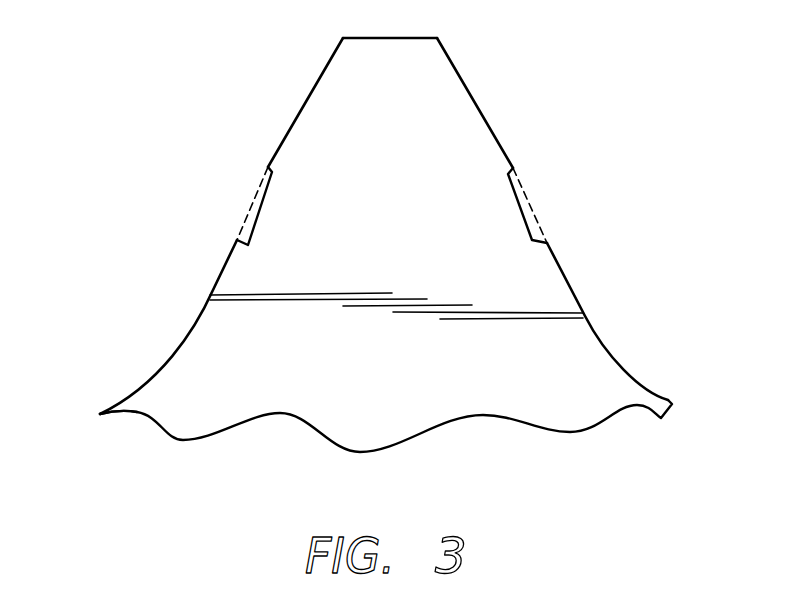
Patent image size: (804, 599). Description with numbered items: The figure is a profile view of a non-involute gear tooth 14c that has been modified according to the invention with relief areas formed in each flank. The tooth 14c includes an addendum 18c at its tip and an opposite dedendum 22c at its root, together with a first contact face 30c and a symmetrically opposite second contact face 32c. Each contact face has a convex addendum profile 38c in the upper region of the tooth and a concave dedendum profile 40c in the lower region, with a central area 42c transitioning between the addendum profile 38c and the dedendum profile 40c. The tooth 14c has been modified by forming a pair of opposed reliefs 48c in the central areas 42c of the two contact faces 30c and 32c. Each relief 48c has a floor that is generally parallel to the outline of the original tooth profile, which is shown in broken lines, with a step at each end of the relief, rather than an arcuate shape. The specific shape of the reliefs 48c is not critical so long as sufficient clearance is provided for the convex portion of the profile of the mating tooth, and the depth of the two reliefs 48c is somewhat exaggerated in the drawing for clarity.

The gear tooth 14c is at (180, 465).
The addendum 18c is at (357, 77).
The addendum profile 38c is at (287, 123).
The reliefs 48c is at (252, 200).
The central area 42c is at (235, 235).
The first contact face 30c is at (222, 278).
The second contact face 32c is at (547, 243).
The dedendum profile 40c is at (190, 328).
The dedendum 22c is at (166, 397).